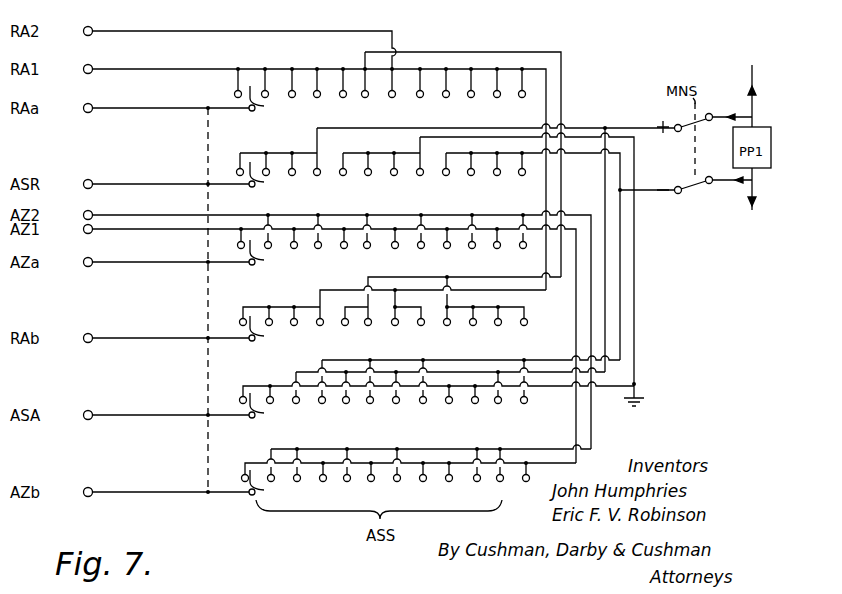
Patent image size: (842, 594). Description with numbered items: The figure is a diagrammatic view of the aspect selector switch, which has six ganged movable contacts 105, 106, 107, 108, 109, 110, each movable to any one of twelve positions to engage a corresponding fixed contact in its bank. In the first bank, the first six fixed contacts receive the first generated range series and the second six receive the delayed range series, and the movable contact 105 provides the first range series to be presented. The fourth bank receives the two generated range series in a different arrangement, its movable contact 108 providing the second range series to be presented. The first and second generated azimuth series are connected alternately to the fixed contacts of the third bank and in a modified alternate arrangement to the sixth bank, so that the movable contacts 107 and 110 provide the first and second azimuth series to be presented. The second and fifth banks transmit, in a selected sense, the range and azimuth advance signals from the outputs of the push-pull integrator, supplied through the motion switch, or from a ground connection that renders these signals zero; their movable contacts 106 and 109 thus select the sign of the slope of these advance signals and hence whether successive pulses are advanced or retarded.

The movable contact 105 is at (264, 103).
The movable contact 106 is at (264, 179).
The movable contact 107 is at (264, 257).
The movable contact 108 is at (264, 333).
The movable contact 109 is at (264, 410).
The movable contact 110 is at (264, 487).